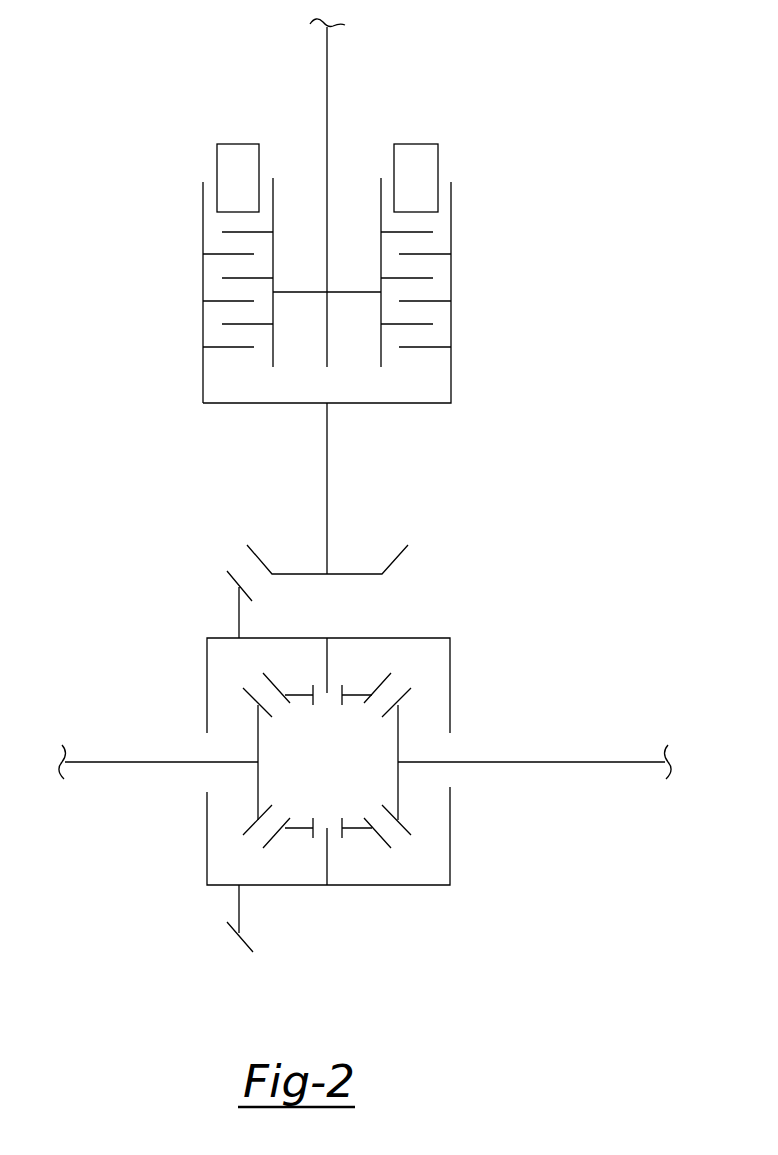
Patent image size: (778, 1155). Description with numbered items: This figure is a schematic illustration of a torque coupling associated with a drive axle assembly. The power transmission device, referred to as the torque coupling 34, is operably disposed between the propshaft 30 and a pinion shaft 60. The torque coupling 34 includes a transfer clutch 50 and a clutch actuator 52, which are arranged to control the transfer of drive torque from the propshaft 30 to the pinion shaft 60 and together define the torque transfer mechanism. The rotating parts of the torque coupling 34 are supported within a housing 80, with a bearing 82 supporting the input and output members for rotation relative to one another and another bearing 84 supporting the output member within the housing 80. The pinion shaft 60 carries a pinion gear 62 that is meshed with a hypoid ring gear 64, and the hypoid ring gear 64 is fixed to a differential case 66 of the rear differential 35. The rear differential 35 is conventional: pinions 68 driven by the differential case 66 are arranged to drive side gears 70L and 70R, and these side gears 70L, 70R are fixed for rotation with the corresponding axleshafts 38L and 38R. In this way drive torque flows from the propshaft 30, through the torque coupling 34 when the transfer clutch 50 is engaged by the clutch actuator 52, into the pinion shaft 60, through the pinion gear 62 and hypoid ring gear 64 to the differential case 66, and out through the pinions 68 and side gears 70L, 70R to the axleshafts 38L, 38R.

The propshaft 30 is at (327, 82).
The torque coupling 34 is at (555, 217).
The rear differential 35 is at (486, 670).
The axleshaft 38L is at (90, 762).
The axleshaft 38R is at (604, 762).
The transfer clutch 50 is at (203, 228).
The clutch actuator 52 is at (415, 167).
The pinion shaft 60 is at (327, 458).
The pinion gear 62 is at (400, 559).
The hypoid ring gear 64 is at (239, 907).
The differential case 66 is at (450, 850).
The pinions 68 is at (352, 697).
The side gear 70L is at (258, 773).
The side gear 70R is at (398, 755).
The housing 80 is at (273, 195).
The bearing 82 is at (451, 333).
The bearing 84 is at (422, 273).